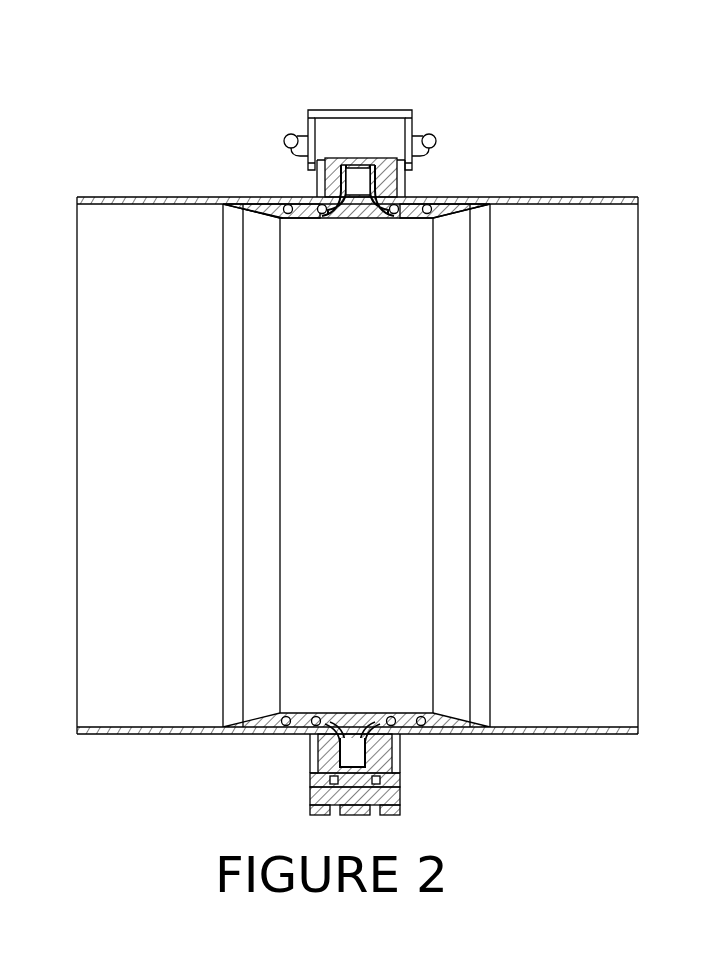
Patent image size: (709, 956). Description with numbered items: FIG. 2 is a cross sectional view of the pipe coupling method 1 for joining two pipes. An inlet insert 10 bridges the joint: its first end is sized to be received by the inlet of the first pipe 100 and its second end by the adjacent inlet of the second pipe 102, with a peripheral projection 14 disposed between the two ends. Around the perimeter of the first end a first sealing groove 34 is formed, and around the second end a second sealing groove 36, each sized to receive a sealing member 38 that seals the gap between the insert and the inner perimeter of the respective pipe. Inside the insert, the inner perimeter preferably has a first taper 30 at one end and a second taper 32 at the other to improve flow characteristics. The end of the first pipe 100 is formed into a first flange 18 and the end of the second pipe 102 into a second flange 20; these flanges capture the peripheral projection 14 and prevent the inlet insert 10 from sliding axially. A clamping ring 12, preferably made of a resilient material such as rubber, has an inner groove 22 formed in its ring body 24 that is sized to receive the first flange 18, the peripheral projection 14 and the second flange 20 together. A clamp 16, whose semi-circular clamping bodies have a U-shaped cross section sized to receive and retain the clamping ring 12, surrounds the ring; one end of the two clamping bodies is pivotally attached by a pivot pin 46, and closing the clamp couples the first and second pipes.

The pipe coupling method 1 is at (101, 790).
The inlet insert 10 is at (377, 703).
The clamping ring 12 is at (389, 203).
The peripheral projection 14 is at (403, 137).
The clamp 16 is at (330, 107).
The first flange 18 is at (338, 205).
The second flange 20 is at (372, 218).
The inner groove 22 is at (362, 168).
The ring body 24 is at (382, 177).
The first taper 30 is at (257, 205).
The second taper 32 is at (452, 215).
The first sealing groove 34 is at (283, 218).
The second sealing groove 36 is at (433, 223).
The sealing member 38 is at (285, 205).
The pivot pin 46 is at (310, 795).
The first pipe 100 is at (160, 197).
The second pipe 102 is at (543, 200).